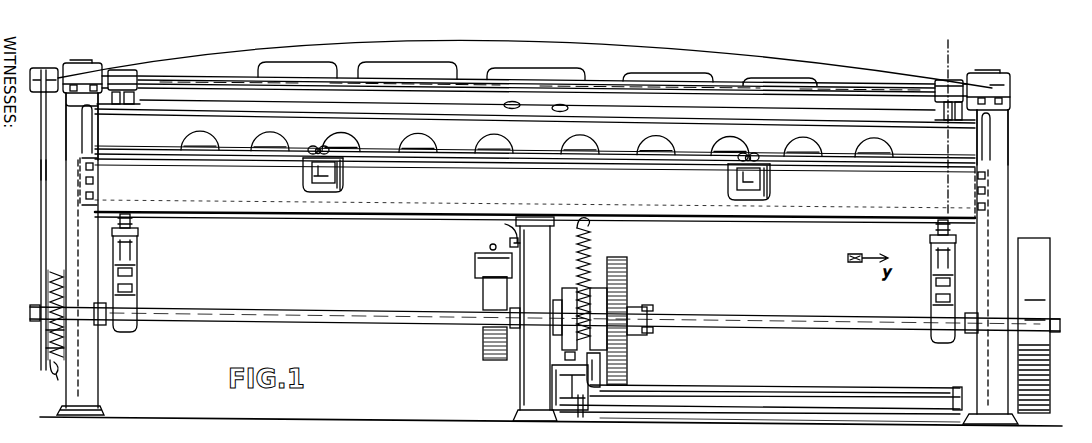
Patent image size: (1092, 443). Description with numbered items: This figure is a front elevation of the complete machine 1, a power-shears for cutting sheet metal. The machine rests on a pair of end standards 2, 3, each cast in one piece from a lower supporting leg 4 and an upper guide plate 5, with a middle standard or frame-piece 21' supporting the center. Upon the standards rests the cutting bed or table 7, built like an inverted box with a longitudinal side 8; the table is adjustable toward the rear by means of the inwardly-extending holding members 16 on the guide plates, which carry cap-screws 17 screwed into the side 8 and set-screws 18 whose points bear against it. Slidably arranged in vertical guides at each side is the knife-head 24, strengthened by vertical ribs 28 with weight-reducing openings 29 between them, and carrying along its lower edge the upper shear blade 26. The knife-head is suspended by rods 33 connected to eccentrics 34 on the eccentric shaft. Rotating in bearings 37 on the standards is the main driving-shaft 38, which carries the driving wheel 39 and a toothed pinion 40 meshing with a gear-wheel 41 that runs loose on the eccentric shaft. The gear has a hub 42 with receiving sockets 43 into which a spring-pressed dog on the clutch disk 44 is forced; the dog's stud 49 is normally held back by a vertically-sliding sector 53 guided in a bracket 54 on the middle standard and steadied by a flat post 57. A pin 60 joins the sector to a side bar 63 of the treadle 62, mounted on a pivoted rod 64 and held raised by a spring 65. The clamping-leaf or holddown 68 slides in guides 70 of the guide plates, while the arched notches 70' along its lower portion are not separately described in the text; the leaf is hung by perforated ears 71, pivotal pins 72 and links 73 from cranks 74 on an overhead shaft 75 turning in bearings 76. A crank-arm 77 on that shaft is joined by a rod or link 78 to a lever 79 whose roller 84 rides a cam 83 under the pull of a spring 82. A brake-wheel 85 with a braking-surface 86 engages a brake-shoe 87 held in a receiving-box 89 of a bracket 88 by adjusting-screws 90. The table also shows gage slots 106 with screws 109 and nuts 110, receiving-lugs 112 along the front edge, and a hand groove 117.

The complete machine 1 is at (551, 319).
The end standard 2 is at (66, 233).
The end standard 3 is at (1000, 250).
The lower supporting leg 4 is at (96, 384).
The upper guide plate 5 is at (67, 117).
The cutting bed or table 7 is at (535, 191).
The longitudinal side 8 is at (535, 189).
The holding member 16 is at (84, 176).
The cap-screw 17 is at (94, 181).
The set-screw 18 is at (94, 167).
The middle standard or frame-piece 21' is at (535, 319).
The knife-head 24 is at (508, 74).
The upper shear blade or cutter 26 is at (500, 150).
The vertically-arranged rib 28 is at (573, 440).
The opening 29 is at (290, 68).
The rod 33 is at (132, 219).
The eccentric 34 is at (130, 263).
The bearing 37 is at (101, 327).
The main driving-shaft 38 is at (29, 313).
The driving or operating wheel 39 is at (1044, 362).
The toothed pinion 40 is at (632, 306).
The gear-wheel 41 is at (626, 266).
The hub 42 is at (655, 306).
The receiving socket or recess 43 is at (597, 290).
The clutch disk or wheel 44 is at (570, 289).
The stud or spur 49 is at (565, 356).
The vertically-sliding sector 53 is at (565, 369).
The bracket 54 is at (570, 392).
The projection or flat post 57 is at (630, 373).
The pin 60 is at (595, 400).
The treadle 62 is at (769, 386).
The side bar 63 is at (585, 405).
The rod 64 is at (810, 420).
The spring 65 is at (590, 251).
The clamping-leaf or holddown 68 is at (535, 133).
The guide 70 is at (544, 132).
The bearing notch 70' is at (537, 162).
The perforated ear or lug 71 is at (141, 103).
The pivotal pin 72 is at (115, 105).
The link 73 is at (128, 105).
The crank 74 is at (125, 72).
The shaft 75 is at (35, 70).
The bearing 76 is at (85, 70).
The crank-arm 77 is at (50, 68).
The rod or link 78 is at (41, 171).
The lever 79 is at (50, 378).
The spring 82 is at (50, 284).
The cam 83 is at (47, 333).
The roller 84 is at (47, 356).
The brake-wheel 85 is at (483, 346).
The braking-surface 86 is at (490, 291).
The brake-shoe 87 is at (490, 271).
The bracket 88 is at (508, 233).
The receiving-box or holder 89 is at (476, 263).
The adjusting-screw 90 is at (491, 246).
The slot 106 is at (338, 173).
The screw 109 is at (319, 146).
The nut 110 is at (310, 158).
The receiving-lug 112 is at (306, 181).
The groove or depression 117 is at (533, 170).